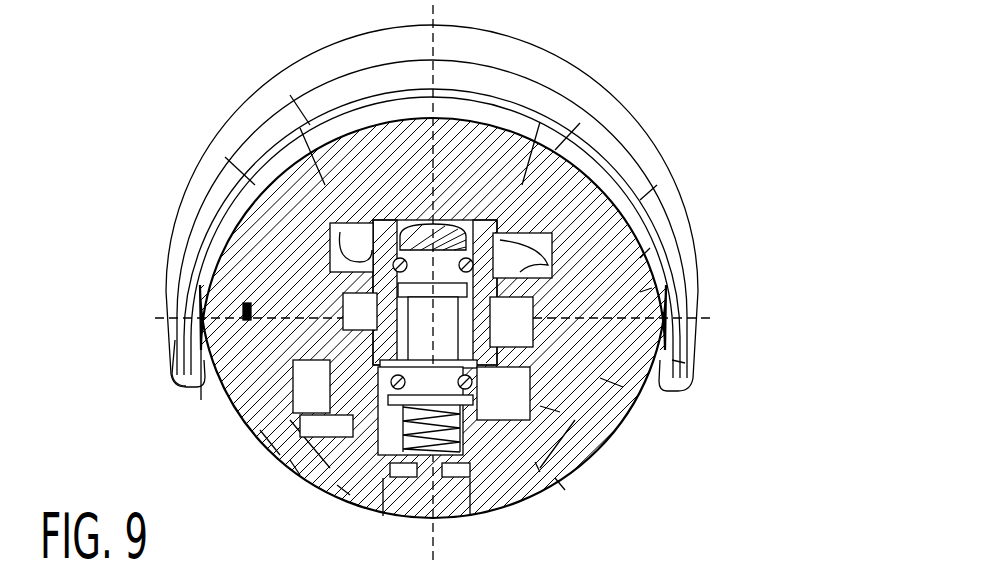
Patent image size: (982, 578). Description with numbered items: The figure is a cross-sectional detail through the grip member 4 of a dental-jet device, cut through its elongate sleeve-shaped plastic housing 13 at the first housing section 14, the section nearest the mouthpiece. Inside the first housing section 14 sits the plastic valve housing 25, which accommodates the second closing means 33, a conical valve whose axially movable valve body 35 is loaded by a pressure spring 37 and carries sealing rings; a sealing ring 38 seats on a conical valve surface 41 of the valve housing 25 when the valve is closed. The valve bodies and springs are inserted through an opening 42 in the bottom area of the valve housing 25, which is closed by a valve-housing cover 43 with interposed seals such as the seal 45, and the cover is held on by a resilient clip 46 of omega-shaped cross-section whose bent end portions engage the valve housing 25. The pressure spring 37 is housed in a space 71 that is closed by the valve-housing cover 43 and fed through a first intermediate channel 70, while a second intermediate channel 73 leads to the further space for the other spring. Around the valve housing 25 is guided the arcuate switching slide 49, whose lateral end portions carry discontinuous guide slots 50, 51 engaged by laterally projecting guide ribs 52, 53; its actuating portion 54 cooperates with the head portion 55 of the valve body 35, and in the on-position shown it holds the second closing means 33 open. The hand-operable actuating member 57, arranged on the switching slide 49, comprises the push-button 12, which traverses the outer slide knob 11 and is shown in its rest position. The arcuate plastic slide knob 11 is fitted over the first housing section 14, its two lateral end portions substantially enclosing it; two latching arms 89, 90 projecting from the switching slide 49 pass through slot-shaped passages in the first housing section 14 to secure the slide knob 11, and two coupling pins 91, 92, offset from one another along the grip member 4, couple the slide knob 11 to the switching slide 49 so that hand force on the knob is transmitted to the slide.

The grip member 4 is at (707, 140).
The slide knob 11 is at (558, 100).
The push-button 12 is at (407, 40).
The housing 13 is at (220, 411).
The first housing section 14 is at (565, 490).
The valve housing 25 is at (318, 372).
The second closing means 33 is at (487, 398).
The valve body 35 is at (215, 393).
The pressure spring 37 is at (390, 470).
The sealing ring 38 is at (337, 485).
The conical valve surface 41 is at (685, 363).
The opening 42 is at (623, 387).
The valve-housing cover 43 is at (462, 505).
The seal 45 is at (560, 412).
The clip 46 is at (290, 460).
The switching slide 49 is at (603, 183).
The guide slot 50 is at (650, 248).
The guide slot 51 is at (247, 250).
The guide rib 52 is at (652, 288).
The guide rib 53 is at (250, 286).
The actuating portion 54 is at (537, 68).
The head portion 55 is at (345, 73).
The actuating member 57 is at (513, 37).
The first intermediate channel 70 is at (590, 337).
The space 71 is at (540, 472).
The second intermediate channel 73 is at (250, 343).
The latching arm 89 is at (657, 185).
The latching arm 90 is at (225, 157).
The coupling pin 91 is at (580, 123).
The coupling pin 92 is at (298, 92).